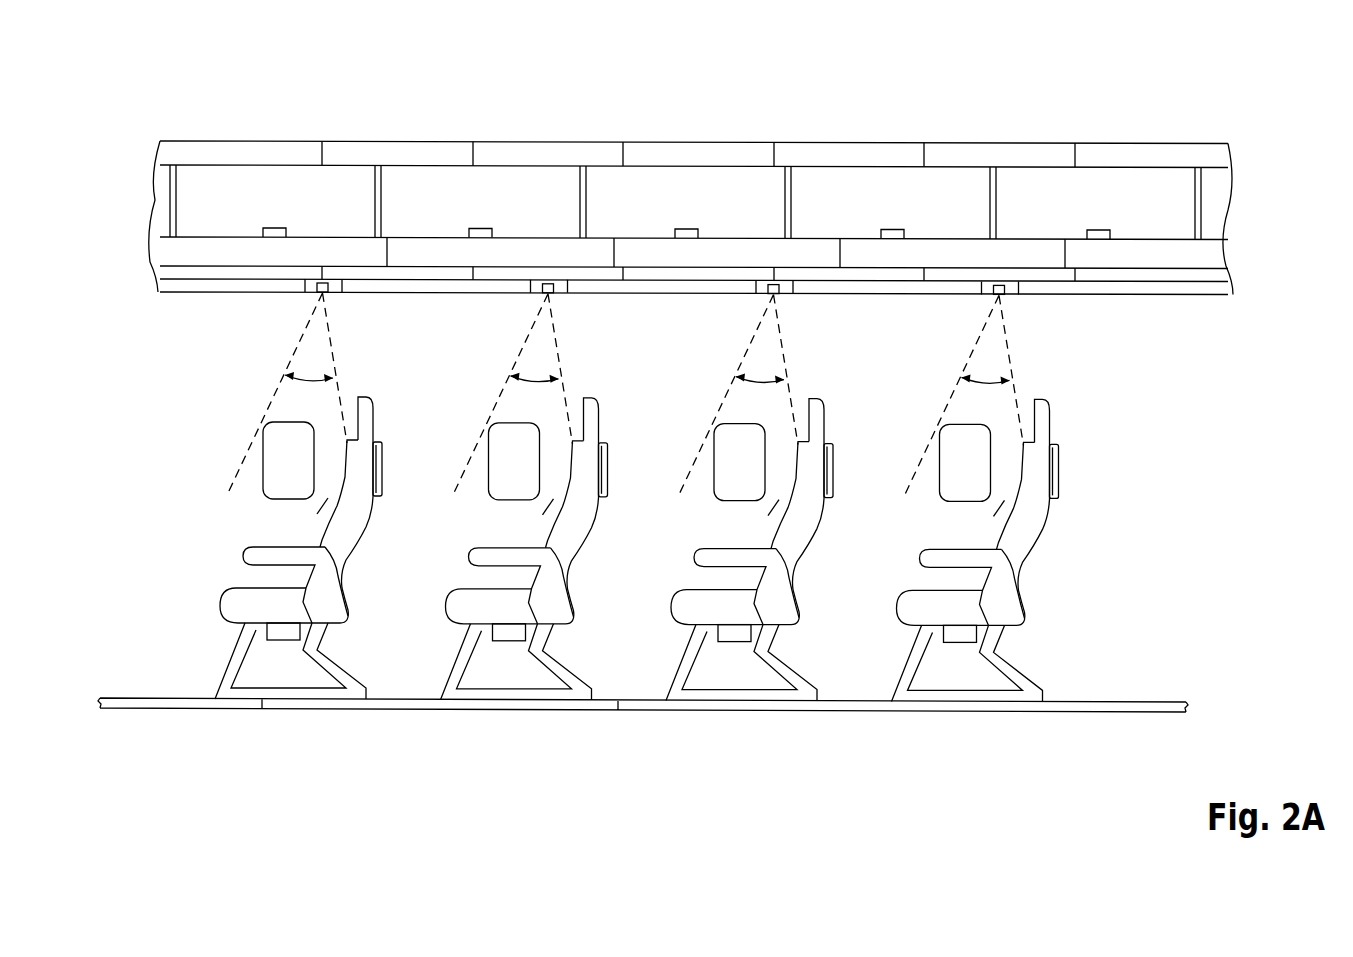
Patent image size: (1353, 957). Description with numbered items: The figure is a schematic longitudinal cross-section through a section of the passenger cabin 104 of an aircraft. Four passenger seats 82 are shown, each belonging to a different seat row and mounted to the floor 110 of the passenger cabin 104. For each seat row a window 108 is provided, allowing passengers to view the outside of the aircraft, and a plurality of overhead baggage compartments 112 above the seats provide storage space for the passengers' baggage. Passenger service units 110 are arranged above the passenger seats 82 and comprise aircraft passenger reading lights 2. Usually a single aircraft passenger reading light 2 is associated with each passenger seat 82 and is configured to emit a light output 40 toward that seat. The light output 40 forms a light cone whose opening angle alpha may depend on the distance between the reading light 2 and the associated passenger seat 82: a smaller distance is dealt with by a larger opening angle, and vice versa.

The aircraft passenger reading light 2 is at (328, 293).
The light output 40 is at (268, 390).
The passenger seat 82 is at (372, 386).
The passenger cabin 104 is at (157, 547).
The window 108 is at (275, 440).
The passenger service unit 110 is at (298, 298).
The overhead baggage compartment 112 is at (298, 183).